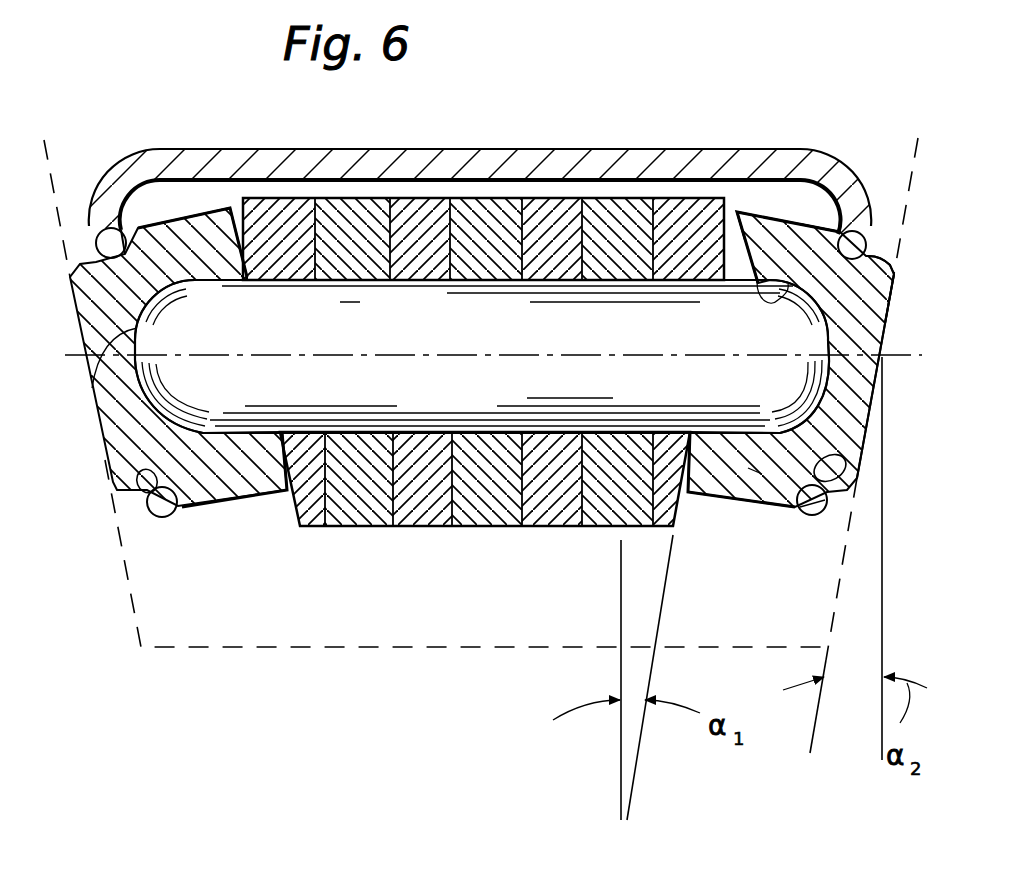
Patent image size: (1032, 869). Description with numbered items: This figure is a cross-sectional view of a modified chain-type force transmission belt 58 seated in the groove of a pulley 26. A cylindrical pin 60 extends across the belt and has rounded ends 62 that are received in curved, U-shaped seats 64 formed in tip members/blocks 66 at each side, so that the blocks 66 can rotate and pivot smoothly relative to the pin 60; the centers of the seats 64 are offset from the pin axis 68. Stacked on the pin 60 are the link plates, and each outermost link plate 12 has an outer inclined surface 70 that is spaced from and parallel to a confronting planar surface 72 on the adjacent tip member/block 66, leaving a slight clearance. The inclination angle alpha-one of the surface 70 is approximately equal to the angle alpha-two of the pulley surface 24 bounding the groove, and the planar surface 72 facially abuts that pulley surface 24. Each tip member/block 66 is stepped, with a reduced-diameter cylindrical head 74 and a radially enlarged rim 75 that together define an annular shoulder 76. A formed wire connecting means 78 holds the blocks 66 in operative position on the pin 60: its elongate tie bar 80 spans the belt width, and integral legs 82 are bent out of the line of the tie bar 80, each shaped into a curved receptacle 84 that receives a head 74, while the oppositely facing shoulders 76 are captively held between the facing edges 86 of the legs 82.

The outermost link plate 12 is at (677, 228).
The pulley surface 24 is at (145, 598).
The pulley 26 is at (91, 584).
The chain-type force transmission belt 58 is at (898, 198).
The pin 60 is at (540, 350).
The rounded ends 62 is at (94, 388).
The U-shaped seats 64 is at (215, 230).
The tip member/block 66 is at (173, 457).
The pin axis 68 is at (890, 358).
The inclined surface 70 is at (678, 555).
The planar surface 72 is at (721, 278).
The cylindrical head 74 is at (876, 260).
The radially enlarged rim 75 is at (830, 229).
The annular shoulder 76 is at (812, 516).
The formed wire connecting means 78 is at (480, 164).
The tie bar 80 is at (423, 162).
The connectors/legs 82 is at (96, 232).
The curved receptacle 84 is at (145, 478).
The facing edges 86 is at (124, 232).